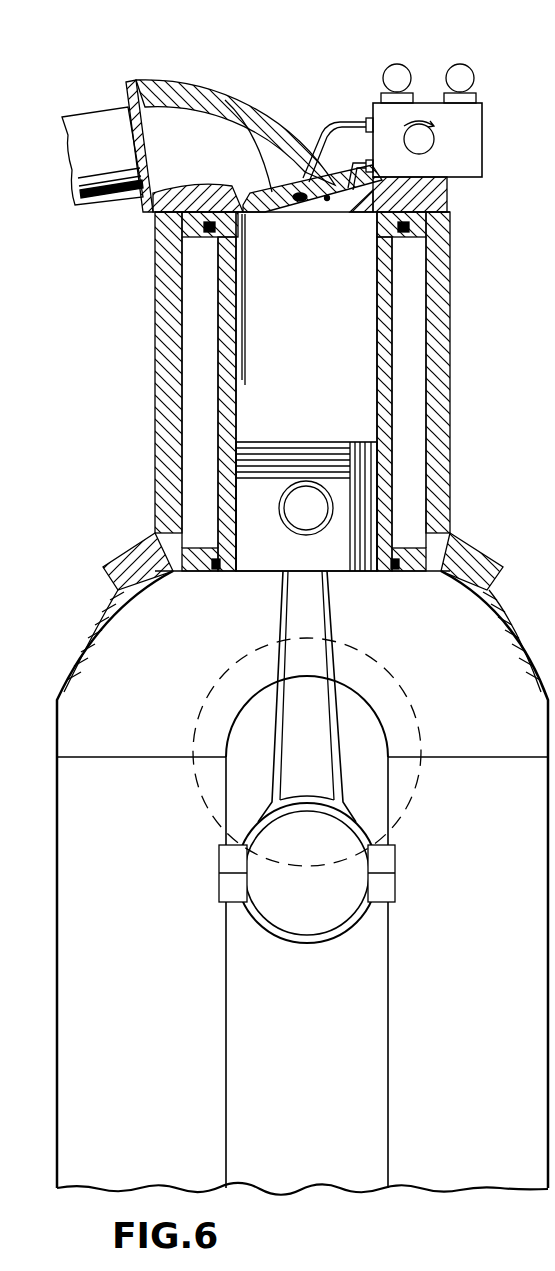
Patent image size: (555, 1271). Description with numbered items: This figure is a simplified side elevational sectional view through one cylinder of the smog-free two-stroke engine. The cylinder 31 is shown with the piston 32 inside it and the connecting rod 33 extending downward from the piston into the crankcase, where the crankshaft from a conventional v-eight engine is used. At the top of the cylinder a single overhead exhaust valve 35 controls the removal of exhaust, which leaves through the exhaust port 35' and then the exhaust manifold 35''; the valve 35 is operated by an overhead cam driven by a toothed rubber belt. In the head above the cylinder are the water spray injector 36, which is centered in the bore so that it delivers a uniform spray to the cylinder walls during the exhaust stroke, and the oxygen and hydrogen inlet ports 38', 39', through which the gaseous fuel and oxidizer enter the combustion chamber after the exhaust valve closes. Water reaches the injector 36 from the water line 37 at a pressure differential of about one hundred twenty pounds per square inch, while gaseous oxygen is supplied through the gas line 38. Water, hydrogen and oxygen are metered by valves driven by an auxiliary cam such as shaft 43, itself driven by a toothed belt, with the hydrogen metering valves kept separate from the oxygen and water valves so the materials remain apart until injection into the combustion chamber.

The cylinder 31 is at (387, 386).
The piston 32 is at (345, 510).
The connecting rod 33 is at (325, 632).
The exhaust valve 35 is at (235, 138).
The exhaust port 35' is at (164, 146).
The exhaust manifold 35'' is at (90, 135).
The water spray injector 36 is at (307, 198).
The water line 37 is at (323, 143).
The gas line 38 is at (348, 134).
The oxygen inlet port 38' is at (355, 242).
The hydrogen inlet port 39' is at (323, 225).
The auxiliary cam shaft 43 is at (428, 146).